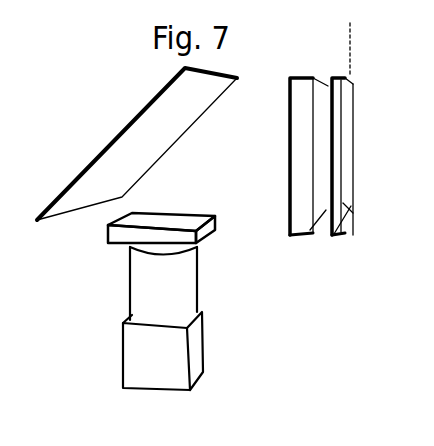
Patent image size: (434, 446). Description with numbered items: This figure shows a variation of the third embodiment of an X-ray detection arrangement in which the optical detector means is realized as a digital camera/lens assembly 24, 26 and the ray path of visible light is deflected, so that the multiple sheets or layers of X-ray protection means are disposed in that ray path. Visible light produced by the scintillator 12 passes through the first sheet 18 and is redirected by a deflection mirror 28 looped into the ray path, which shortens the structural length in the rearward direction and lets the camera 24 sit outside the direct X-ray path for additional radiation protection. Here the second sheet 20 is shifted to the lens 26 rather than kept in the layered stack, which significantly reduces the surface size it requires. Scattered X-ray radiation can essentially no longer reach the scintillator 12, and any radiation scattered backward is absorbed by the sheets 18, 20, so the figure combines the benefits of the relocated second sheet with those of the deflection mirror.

The scintillator 12 is at (352, 237).
The first sheet 18 is at (300, 235).
The second sheet 20 is at (205, 233).
The camera 24 is at (130, 348).
The lens 26 is at (140, 292).
The deflection mirror 28 is at (137, 144).